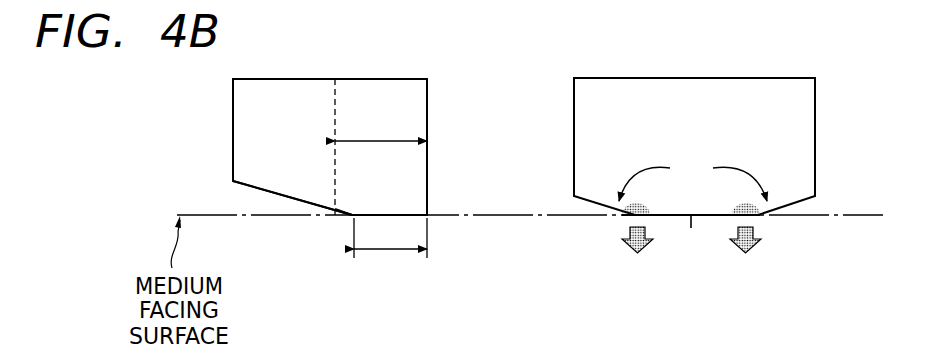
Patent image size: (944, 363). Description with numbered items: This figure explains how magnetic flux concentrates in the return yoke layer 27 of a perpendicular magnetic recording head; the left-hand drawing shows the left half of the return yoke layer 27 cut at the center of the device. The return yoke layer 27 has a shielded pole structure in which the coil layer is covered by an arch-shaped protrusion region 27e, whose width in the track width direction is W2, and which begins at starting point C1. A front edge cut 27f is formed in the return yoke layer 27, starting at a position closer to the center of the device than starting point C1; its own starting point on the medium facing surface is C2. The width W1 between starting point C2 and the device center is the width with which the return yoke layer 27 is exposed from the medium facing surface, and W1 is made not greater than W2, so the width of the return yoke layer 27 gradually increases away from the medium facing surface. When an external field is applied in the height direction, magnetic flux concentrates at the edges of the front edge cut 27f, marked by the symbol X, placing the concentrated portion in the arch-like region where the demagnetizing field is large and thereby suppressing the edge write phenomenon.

The return yoke layer 27 is at (701, 88).
The protrusion region 27e is at (374, 88).
The front edge cut 27f is at (300, 204).
The starting point of the protrusion region C1 is at (334, 206).
The starting point of the front edge cut C2 is at (351, 216).
The width of the return yoke layer exposed from the medium facing surface W1 is at (390, 238).
The width of the protrusion region in the track width direction W2 is at (381, 130).
The magnetic flux concentrated portion X is at (693, 168).